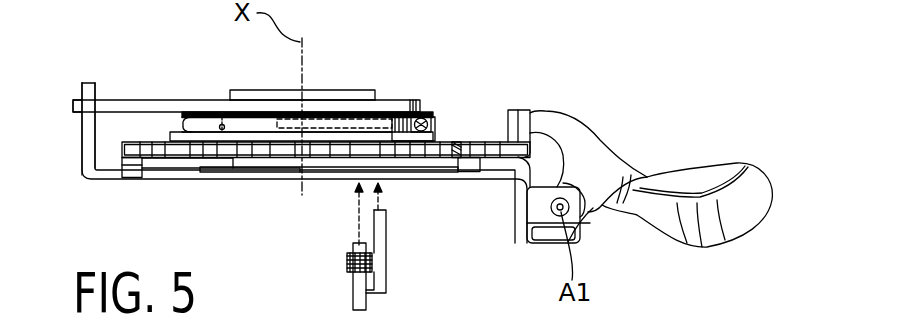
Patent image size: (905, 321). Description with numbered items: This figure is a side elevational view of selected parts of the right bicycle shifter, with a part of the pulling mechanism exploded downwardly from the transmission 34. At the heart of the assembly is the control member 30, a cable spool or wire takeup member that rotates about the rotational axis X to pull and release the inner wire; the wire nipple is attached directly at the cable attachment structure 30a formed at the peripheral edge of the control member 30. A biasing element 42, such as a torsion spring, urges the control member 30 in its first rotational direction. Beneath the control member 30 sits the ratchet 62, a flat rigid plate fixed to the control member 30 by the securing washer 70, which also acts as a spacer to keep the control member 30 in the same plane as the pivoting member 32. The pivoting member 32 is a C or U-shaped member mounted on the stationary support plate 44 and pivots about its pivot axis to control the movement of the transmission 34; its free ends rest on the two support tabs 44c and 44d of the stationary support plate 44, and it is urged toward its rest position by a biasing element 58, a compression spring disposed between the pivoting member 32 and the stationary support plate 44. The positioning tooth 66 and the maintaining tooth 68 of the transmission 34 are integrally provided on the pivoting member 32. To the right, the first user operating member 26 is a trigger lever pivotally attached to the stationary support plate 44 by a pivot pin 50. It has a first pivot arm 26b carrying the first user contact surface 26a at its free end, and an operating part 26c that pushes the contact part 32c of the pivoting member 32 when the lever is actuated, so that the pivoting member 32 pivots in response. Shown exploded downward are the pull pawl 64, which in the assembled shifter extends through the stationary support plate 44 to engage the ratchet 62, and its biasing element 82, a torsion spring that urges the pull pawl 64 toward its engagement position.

The first user operating member 26 is at (660, 182).
The first user contact surface 26a is at (741, 216).
The first pivot arm 26b is at (618, 172).
The operating part 26c is at (531, 113).
The control member 30 is at (226, 86).
The cable attachment structure 30a is at (431, 136).
The pivoting member 32 is at (478, 137).
The contact part 32c is at (498, 118).
The transmission 34 is at (158, 134).
The biasing element 42 is at (386, 94).
The stationary support plate 44 is at (100, 186).
The support tab 44c is at (59, 129).
The support tab 44d is at (464, 163).
The pivot pin 50 is at (528, 229).
The biasing element 58 is at (207, 175).
The ratchet 62 is at (186, 168).
The pull pawl 64 is at (386, 266).
The positioning tooth 66 is at (165, 160).
The maintaining tooth 68 is at (456, 142).
The securing washer 70 is at (271, 164).
The biasing element 82 is at (350, 264).